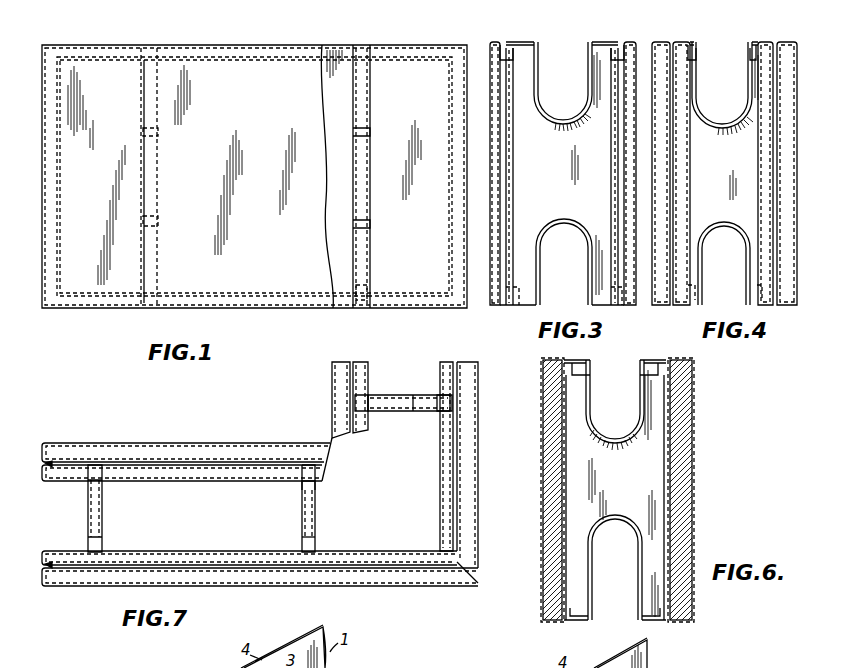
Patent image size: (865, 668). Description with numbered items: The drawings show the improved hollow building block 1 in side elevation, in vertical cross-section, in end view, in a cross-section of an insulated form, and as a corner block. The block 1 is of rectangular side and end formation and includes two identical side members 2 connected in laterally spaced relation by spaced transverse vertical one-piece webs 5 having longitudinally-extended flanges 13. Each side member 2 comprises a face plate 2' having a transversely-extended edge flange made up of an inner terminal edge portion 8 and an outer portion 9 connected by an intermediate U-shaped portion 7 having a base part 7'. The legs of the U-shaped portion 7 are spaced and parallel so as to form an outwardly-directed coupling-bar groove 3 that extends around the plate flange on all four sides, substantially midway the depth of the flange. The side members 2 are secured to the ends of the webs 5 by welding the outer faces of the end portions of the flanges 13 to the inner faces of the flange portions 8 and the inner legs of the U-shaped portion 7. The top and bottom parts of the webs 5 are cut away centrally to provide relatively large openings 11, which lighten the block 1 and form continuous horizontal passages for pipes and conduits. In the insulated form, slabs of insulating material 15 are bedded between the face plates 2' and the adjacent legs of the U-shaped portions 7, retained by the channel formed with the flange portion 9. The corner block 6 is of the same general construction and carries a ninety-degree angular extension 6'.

In FIG. 1, the hollow building block 1 is at (447, 37).
In FIG. 3, the hollow building block 1 is at (540, 36).
In FIG. 4, the hollow building block 1 is at (705, 34).
In FIG. 1, the side member 2 is at (278, 173).
In FIG. 3, the side member 2 is at (561, 173).
In FIG. 4, the side member 2 is at (723, 127).
In FIG. 6, the side member 2 is at (614, 490).
In FIG. 7, the side member 2 is at (260, 512).
In FIG. 1, the face plate 2' is at (218, 170).
In FIG. 3, the face plate 2' is at (482, 115).
In FIG. 4, the face plate 2' is at (645, 112).
In FIG. 6, the face plate 2' is at (618, 442).
In FIG. 1, the coupling-bar groove 3 is at (393, 297).
In FIG. 3, the coupling-bar groove 3 is at (509, 42).
In FIG. 4, the coupling-bar groove 3 is at (674, 40).
In FIG. 6, the coupling-bar groove 3 is at (662, 360).
In FIG. 7, the coupling-bar groove 3 is at (135, 443).
In FIG. 1, the web 5 is at (158, 162).
In FIG. 3, the web 5 is at (560, 185).
In FIG. 4, the web 5 is at (728, 185).
In FIG. 6, the web 5 is at (623, 493).
In FIG. 7, the web 5 is at (103, 508).
In FIG. 7, the corner block 6 is at (297, 417).
In FIG. 7, the angular extension 6' is at (404, 364).
In FIG. 1, the U-shaped portion 7 is at (261, 138).
In FIG. 3, the U-shaped portion 7 is at (562, 57).
In FIG. 4, the U-shaped portion 7 is at (722, 52).
In FIG. 6, the U-shaped portion 7 is at (615, 491).
In FIG. 1, the base part 7' is at (439, 78).
In FIG. 3, the base part 7' is at (562, 73).
In FIG. 1, the inner terminal edge portion 8 is at (338, 46).
In FIG. 3, the inner terminal edge portion 8 is at (522, 40).
In FIG. 4, the inner terminal edge portion 8 is at (690, 40).
In FIG. 6, the inner terminal edge portion 8 is at (650, 360).
In FIG. 7, the inner terminal edge portion 8 is at (236, 476).
In FIG. 1, the outer portion 9 is at (90, 46).
In FIG. 3, the outer portion 9 is at (494, 40).
In FIG. 4, the outer portion 9 is at (656, 40).
In FIG. 6, the outer portion 9 is at (548, 358).
In FIG. 7, the outer portion 9 is at (230, 445).
In FIG. 1, the opening 11 is at (360, 97).
In FIG. 3, the opening 11 is at (563, 173).
In FIG. 4, the opening 11 is at (722, 173).
In FIG. 6, the opening 11 is at (615, 490).
In FIG. 1, the flange 13 is at (150, 133).
In FIG. 3, the flange 13 is at (556, 128).
In FIG. 4, the flange 13 is at (712, 128).
In FIG. 6, the flange 13 is at (668, 440).
In FIG. 7, the flange 13 is at (318, 488).
In FIG. 6, the insulating material slab 15 is at (554, 478).